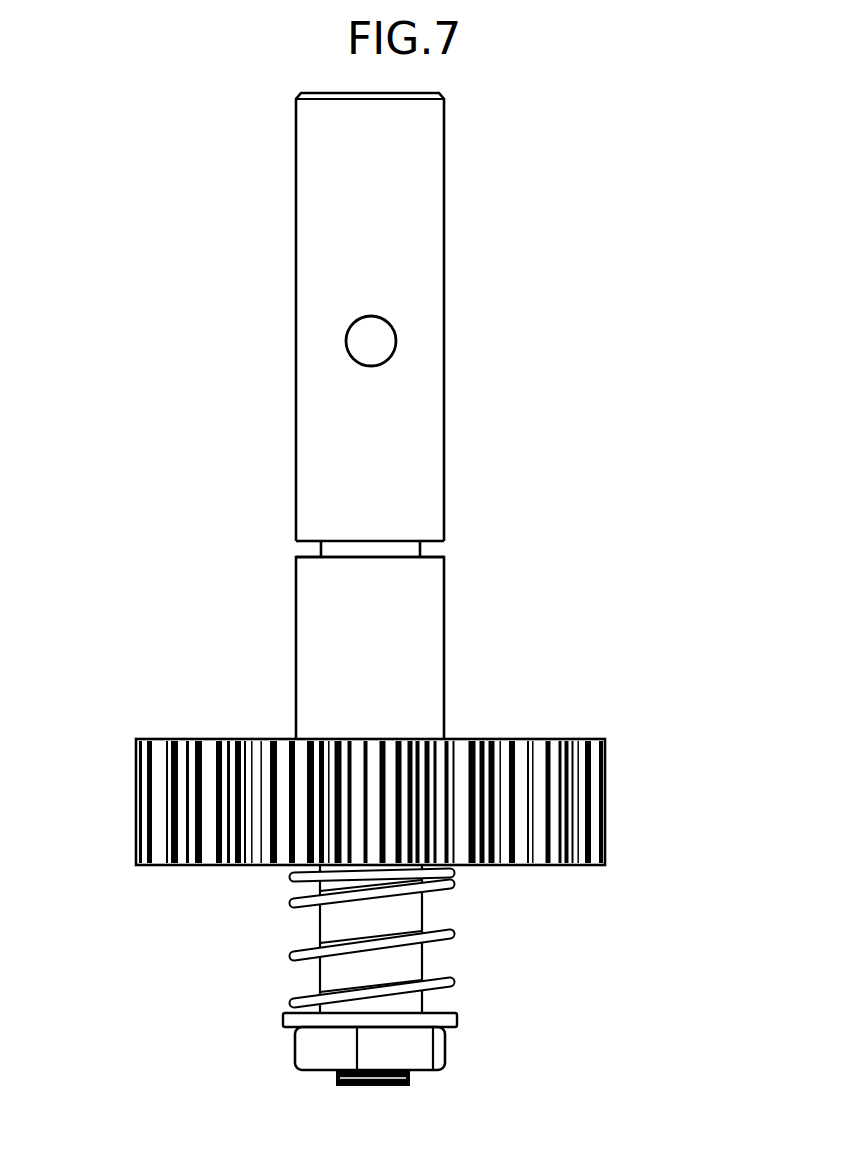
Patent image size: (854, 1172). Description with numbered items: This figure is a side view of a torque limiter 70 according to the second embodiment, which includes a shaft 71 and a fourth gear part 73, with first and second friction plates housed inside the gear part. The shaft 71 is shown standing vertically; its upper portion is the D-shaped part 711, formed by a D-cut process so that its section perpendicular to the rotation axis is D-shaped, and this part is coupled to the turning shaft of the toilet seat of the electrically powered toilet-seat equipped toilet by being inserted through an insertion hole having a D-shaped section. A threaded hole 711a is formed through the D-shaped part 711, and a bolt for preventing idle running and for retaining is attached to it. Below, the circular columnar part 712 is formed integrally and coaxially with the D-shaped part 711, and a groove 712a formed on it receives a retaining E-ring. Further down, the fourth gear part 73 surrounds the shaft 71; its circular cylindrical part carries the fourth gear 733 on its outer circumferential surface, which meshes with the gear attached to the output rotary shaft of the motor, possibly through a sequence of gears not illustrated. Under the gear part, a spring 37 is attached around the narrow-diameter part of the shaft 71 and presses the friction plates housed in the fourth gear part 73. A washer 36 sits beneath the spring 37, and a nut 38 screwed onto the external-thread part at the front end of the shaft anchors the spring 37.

The torque limiter 70 is at (699, 338).
The shaft 71 is at (258, 496).
The D-shaped part 711 is at (403, 200).
The threaded hole 711a is at (378, 345).
The circular columnar part 712 is at (430, 677).
The groove 712a is at (444, 549).
The fourth gear part 73 is at (392, 802).
The fourth gear 733 is at (172, 812).
The spring 37 is at (436, 940).
The washer 36 is at (456, 1012).
The nut 38 is at (420, 1057).